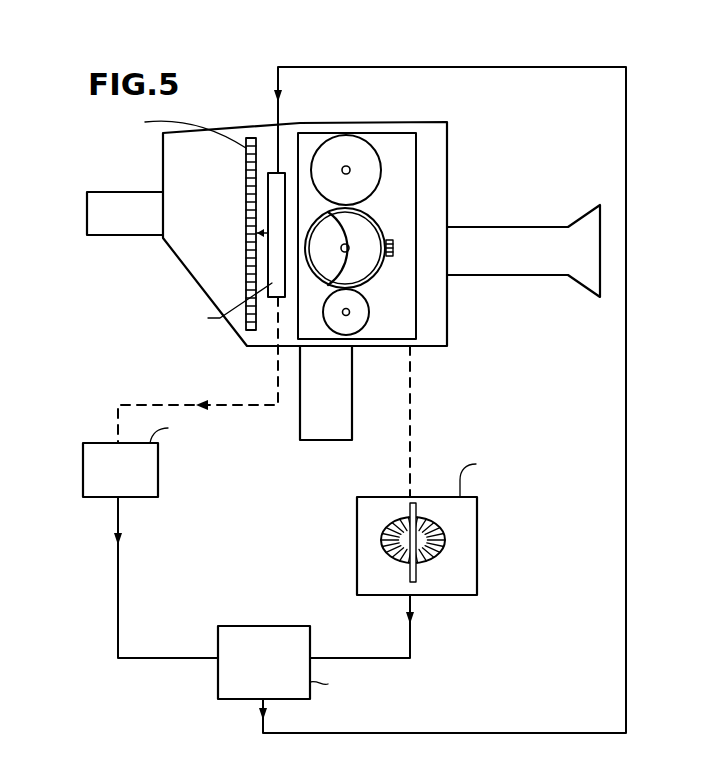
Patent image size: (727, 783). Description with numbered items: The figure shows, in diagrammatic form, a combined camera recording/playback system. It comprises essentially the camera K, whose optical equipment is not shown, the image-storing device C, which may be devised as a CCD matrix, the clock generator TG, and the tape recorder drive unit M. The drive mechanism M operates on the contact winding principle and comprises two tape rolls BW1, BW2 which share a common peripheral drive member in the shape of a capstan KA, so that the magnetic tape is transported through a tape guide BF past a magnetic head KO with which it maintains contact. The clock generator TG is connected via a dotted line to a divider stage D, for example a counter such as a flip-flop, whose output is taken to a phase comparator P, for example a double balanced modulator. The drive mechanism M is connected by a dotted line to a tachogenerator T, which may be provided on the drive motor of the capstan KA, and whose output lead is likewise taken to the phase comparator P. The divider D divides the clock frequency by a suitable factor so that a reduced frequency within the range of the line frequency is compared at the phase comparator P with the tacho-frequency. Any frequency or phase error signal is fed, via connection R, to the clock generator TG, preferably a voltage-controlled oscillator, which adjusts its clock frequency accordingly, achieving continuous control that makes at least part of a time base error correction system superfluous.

The camera K is at (448, 152).
The tape recorder drive unit M is at (405, 192).
The tape roll BW1 is at (345, 142).
The capstan KA is at (345, 248).
The magnetic head KO is at (395, 262).
The tape guide BF is at (390, 230).
The tape roll BW2 is at (348, 322).
The image-storing device C is at (246, 155).
The clock generator TG is at (276, 262).
The connection R is at (626, 622).
The divider stage D is at (152, 466).
The tachogenerator T is at (465, 528).
The phase comparator P is at (312, 667).